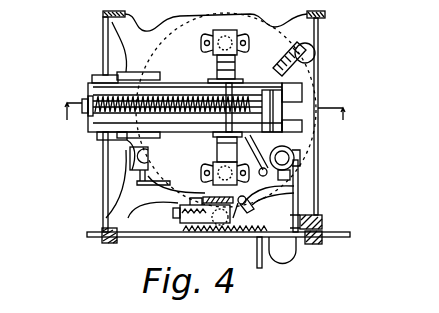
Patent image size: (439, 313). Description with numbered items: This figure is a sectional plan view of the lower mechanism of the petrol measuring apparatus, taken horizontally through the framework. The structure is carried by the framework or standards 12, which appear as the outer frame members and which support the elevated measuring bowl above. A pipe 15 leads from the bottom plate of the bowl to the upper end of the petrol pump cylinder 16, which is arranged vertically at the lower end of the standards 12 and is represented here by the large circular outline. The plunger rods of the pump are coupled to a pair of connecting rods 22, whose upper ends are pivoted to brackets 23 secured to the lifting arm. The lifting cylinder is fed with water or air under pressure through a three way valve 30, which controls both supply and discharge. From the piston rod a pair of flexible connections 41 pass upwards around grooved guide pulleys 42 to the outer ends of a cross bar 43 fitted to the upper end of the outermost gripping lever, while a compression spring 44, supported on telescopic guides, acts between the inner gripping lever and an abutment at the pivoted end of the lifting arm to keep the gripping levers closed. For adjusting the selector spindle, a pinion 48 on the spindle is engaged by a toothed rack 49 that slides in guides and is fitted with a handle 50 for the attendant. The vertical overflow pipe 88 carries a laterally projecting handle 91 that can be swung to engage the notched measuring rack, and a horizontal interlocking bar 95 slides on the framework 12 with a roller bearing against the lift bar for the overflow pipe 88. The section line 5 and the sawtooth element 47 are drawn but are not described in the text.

The section line 5- 5 is at (204, 118).
The standards 12 is at (112, 30).
The pipe 15 is at (302, 70).
The petrol pump cylinder 16 is at (226, 107).
The connecting rods 22 is at (243, 50).
The brackets 23 is at (237, 63).
The three way valve 30 is at (136, 165).
The flexible connections 41 is at (135, 72).
The grooved guide pulleys 42 is at (117, 75).
The cross bar 43 is at (284, 105).
The compression spring 44 is at (168, 99).
The rack 47 is at (219, 237).
The pinion 48 is at (197, 232).
The toothed rack 49 is at (242, 230).
The handle 50 is at (266, 259).
The vertical overflow pipe 88 is at (290, 148).
The laterally projecting handle 91 is at (290, 203).
The horizontal interlocking bar 95 is at (258, 207).